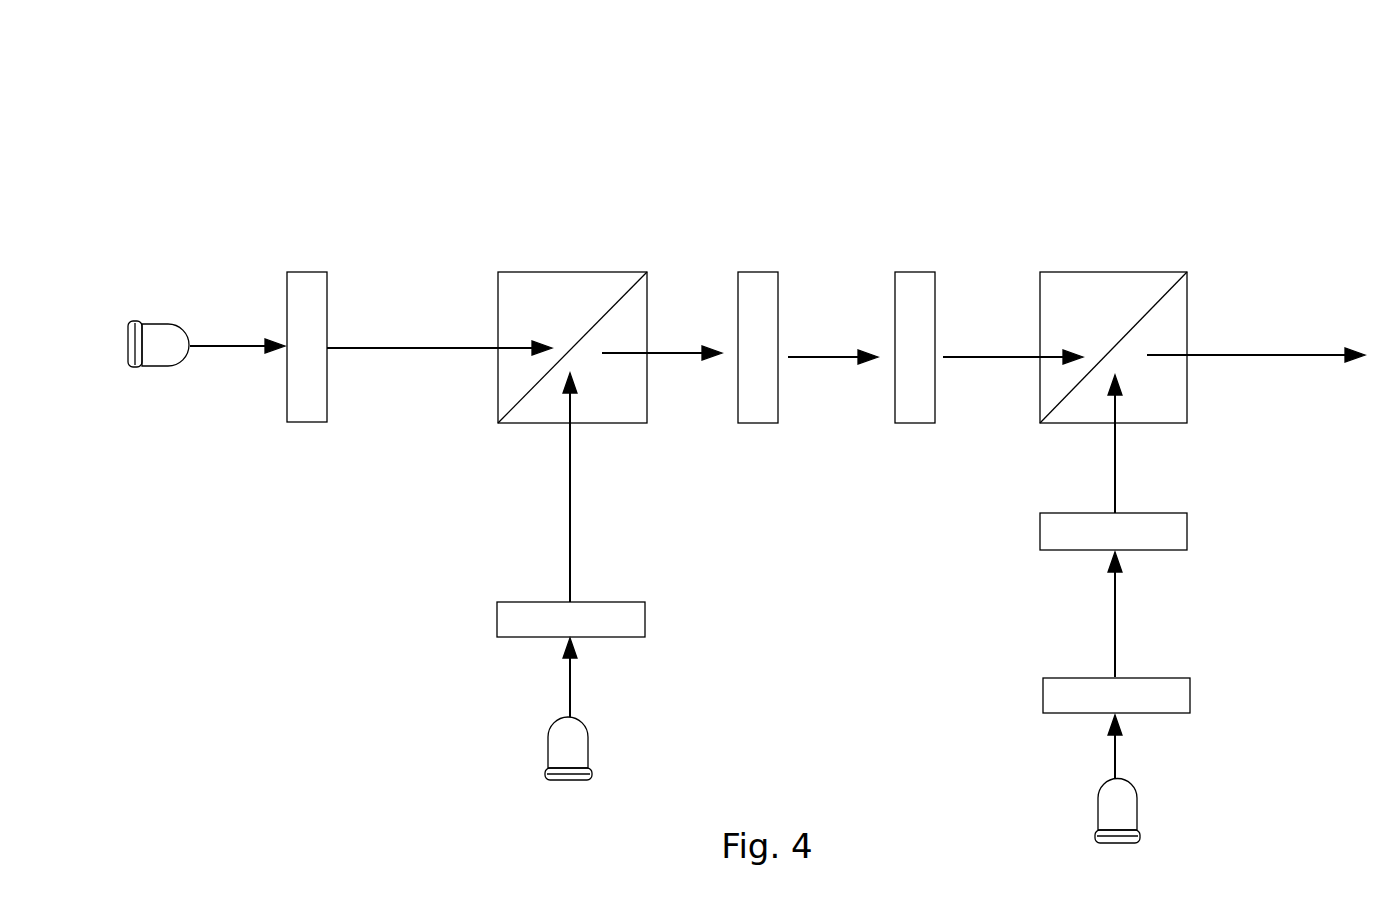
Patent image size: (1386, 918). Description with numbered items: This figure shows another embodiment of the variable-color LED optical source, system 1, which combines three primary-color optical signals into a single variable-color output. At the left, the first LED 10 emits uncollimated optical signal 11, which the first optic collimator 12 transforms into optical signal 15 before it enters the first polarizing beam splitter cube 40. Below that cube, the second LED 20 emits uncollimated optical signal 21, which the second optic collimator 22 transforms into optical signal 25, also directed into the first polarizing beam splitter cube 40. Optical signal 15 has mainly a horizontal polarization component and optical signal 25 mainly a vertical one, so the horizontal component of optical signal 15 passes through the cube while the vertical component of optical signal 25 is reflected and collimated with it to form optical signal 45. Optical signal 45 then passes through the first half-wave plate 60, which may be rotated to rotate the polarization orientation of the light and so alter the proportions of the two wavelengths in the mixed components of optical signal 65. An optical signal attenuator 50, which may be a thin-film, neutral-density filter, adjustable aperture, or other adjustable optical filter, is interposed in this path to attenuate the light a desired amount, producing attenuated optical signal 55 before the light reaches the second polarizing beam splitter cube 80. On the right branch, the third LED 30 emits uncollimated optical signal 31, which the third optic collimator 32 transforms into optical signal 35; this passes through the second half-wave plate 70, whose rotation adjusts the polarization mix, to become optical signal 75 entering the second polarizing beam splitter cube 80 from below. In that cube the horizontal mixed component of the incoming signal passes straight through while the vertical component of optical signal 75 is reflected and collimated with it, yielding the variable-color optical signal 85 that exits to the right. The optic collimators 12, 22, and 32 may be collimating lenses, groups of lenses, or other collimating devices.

The system 1 is at (355, 122).
The first LED 10 is at (163, 323).
The uncollimated optical signal 11 is at (233, 347).
The first optic collimator 12 is at (308, 270).
The optical signal 15 is at (428, 347).
The second LED 20 is at (547, 730).
The uncollimated optical signal 21 is at (575, 683).
The second optic collimator 22 is at (497, 622).
The optical signal 25 is at (570, 487).
The third LED 30 is at (1100, 787).
The uncollimated optical signal 31 is at (1118, 757).
The third optic collimator 32 is at (1043, 698).
The optical signal 35 is at (1118, 607).
The first polarizing beam splitter cube 40 is at (573, 270).
The optical signal 45 is at (693, 355).
The optical signal attenuator 50 is at (915, 270).
The attenuated optical signal 55 is at (997, 357).
The first half-wave plate 60 is at (757, 270).
The optical signal 65 is at (842, 357).
The second half-wave plate 70 is at (1040, 533).
The optical signal 75 is at (1118, 450).
The second polarizing beam splitter cube 80 is at (1120, 270).
The variable-color optical signal 85 is at (1257, 357).